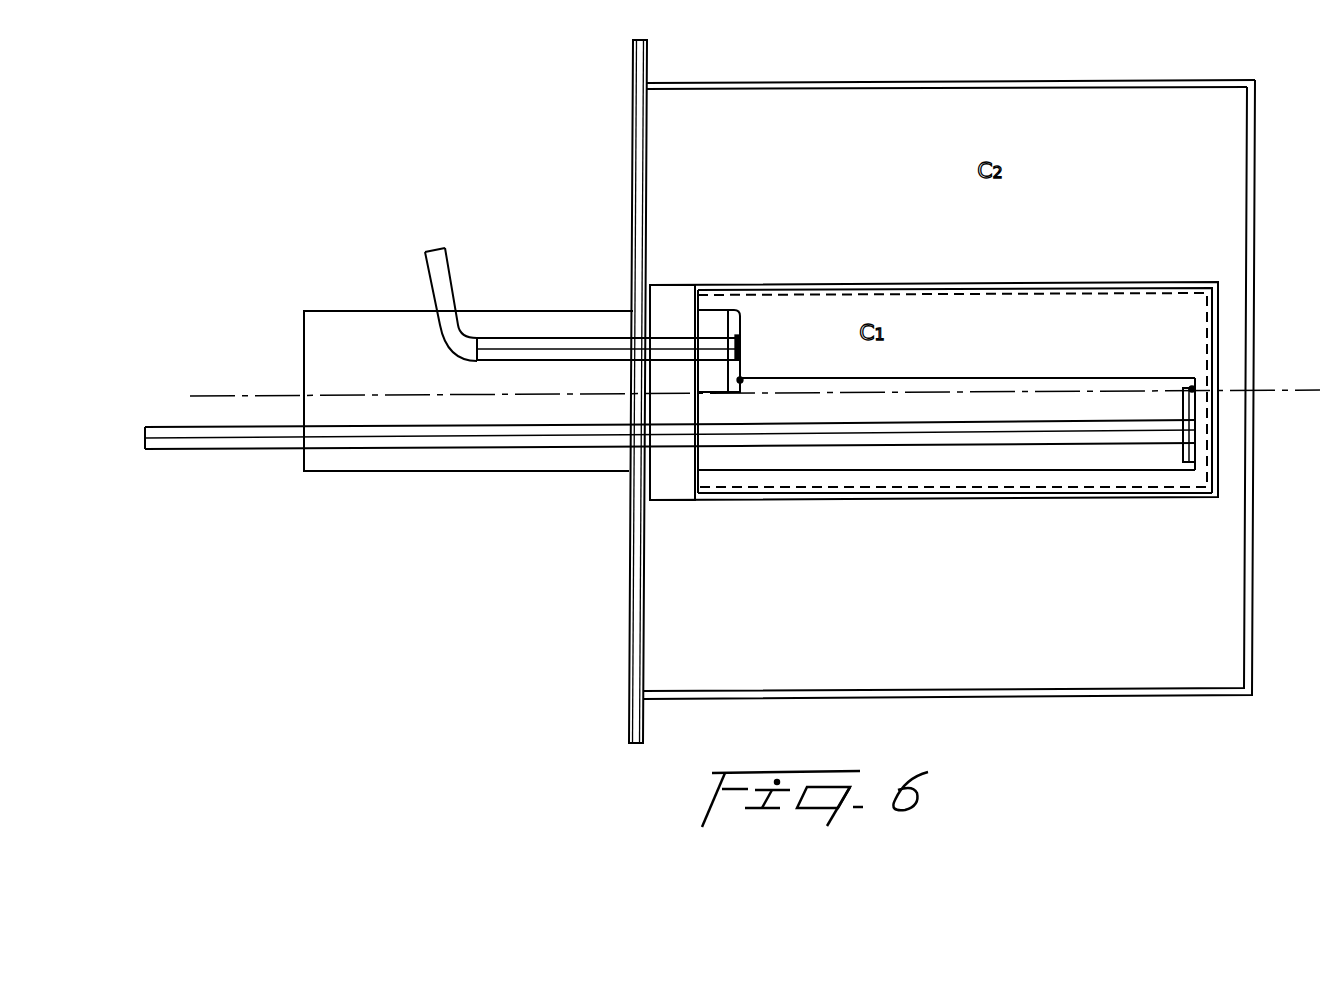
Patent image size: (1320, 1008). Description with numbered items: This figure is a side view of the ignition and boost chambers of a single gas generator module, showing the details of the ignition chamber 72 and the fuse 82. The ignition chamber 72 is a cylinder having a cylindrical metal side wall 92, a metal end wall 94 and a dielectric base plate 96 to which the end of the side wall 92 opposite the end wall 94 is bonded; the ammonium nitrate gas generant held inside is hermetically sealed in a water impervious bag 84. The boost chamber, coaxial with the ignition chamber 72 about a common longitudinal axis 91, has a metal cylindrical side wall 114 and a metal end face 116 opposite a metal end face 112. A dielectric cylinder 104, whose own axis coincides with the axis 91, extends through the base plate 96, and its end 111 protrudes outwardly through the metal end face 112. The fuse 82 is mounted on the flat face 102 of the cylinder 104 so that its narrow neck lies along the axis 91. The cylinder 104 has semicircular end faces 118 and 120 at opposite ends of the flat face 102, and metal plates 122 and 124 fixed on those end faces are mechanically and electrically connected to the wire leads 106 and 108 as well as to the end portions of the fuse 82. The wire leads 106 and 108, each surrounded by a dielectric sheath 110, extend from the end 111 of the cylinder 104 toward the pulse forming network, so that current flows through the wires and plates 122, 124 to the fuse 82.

The ignition chamber 72 is at (1053, 352).
The fuse 82 is at (1128, 380).
The water impervious bag 84 is at (1040, 300).
The longitudinal axis 91 is at (272, 394).
The cylindrical metal side wall 92 is at (853, 495).
The metal end wall 94 is at (1222, 290).
The dielectric base plate 96 is at (672, 300).
The flat face 102 is at (1011, 393).
The dielectric cylinder 104 is at (1133, 450).
The wire lead 106 is at (443, 265).
The wire lead 108 is at (248, 440).
The dielectric sheath 110 is at (547, 343).
The end of cylinder 111 is at (400, 460).
The metal end face 112 is at (631, 632).
The metal cylindrical side wall 114 is at (1022, 80).
The metal end face 116 is at (1254, 598).
The semicircular end face 118 is at (721, 324).
The semicircular end face 120 is at (1197, 453).
The metal plate 122 is at (737, 368).
The metal plate 124 is at (1193, 400).